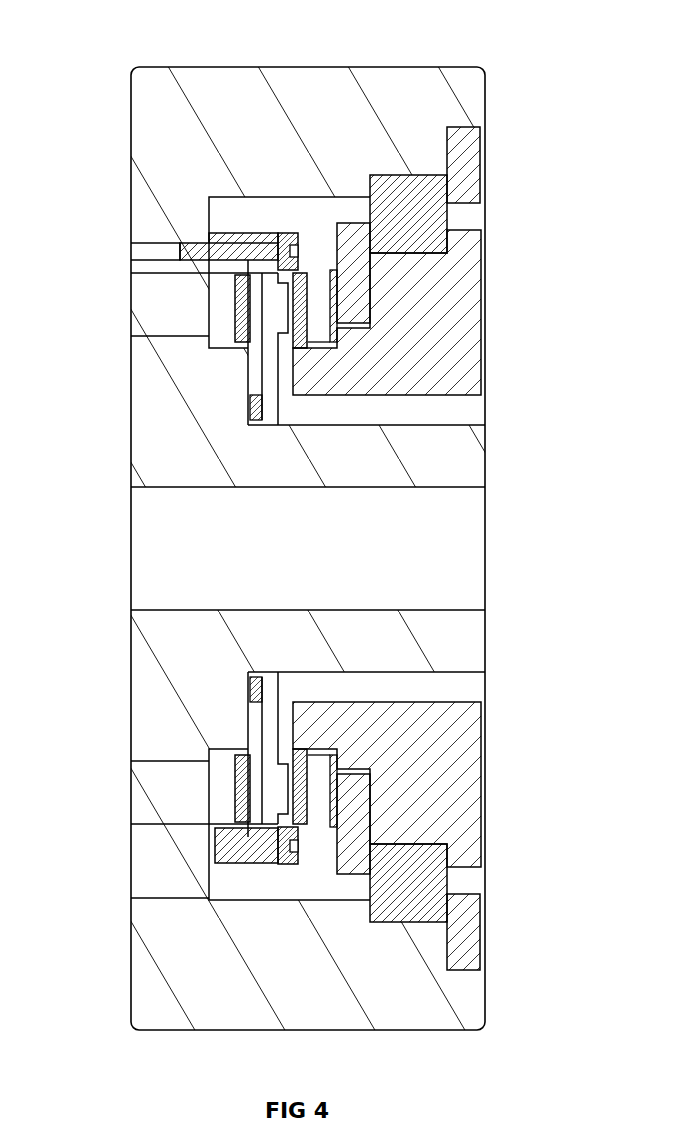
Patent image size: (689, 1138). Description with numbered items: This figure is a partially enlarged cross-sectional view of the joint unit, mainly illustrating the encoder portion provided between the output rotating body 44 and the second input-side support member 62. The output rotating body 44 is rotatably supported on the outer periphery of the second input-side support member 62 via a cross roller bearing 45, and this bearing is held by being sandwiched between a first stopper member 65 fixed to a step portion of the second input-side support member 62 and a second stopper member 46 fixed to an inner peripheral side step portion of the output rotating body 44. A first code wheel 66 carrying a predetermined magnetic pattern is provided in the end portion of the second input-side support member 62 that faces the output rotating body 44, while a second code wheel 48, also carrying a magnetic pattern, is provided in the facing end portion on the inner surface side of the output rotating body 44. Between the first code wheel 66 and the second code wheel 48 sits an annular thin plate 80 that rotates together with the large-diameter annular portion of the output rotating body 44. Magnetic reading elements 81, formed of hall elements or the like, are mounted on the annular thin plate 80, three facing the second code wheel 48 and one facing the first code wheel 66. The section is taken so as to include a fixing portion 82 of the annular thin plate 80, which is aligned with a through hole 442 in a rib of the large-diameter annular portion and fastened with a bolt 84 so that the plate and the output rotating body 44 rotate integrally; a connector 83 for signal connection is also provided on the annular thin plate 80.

The output rotating body 44 is at (130, 126).
The through holes 442 is at (131, 257).
The cross roller bearing 45 is at (416, 175).
The second stopper member 46 is at (463, 145).
The second code wheel 48 is at (240, 322).
The second input-side support member 62 is at (470, 280).
The first stopper member 65 is at (347, 223).
The first code wheel 66 is at (305, 302).
The annular thin plate 80 is at (258, 235).
The magnetic reading element 81 is at (275, 300).
The fixing portion 82 is at (209, 222).
The connector 83 is at (213, 850).
The bolt 84 is at (289, 235).